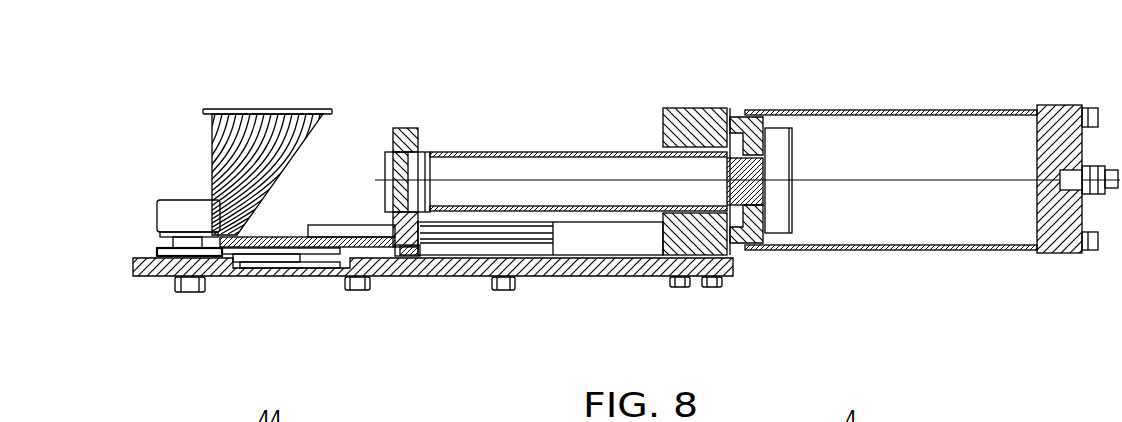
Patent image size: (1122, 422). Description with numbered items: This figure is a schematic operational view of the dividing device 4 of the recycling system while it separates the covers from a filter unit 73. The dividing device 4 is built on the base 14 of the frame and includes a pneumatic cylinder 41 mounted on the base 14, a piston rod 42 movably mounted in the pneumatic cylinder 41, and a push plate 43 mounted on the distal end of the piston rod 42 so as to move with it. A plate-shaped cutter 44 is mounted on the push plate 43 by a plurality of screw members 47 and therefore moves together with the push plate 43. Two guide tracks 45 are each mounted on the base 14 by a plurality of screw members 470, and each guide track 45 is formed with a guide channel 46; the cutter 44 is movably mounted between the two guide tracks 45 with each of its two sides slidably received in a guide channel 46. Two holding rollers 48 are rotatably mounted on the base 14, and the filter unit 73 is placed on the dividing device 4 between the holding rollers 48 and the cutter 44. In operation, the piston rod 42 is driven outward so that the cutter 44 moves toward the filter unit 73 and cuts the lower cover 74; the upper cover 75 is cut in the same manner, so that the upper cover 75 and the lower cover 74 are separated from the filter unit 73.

The dividing device 4 is at (803, 102).
The pneumatic cylinder 41 is at (938, 112).
The piston rod 42 is at (590, 152).
The push plate 43 is at (405, 128).
The plate-shaped cutter 44 is at (287, 237).
The guide track 45 is at (563, 223).
The guide channel 46 is at (553, 231).
The screw member 47 is at (193, 290).
The screw member 470 is at (362, 291).
The holding roller 48 is at (168, 217).
The base 14 is at (407, 262).
The filter unit 73 is at (228, 157).
The lower cover 74 is at (288, 256).
The upper cover 75 is at (278, 112).